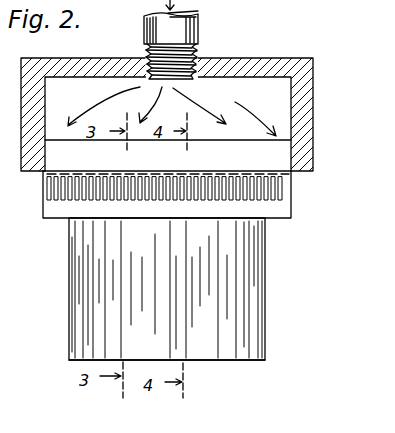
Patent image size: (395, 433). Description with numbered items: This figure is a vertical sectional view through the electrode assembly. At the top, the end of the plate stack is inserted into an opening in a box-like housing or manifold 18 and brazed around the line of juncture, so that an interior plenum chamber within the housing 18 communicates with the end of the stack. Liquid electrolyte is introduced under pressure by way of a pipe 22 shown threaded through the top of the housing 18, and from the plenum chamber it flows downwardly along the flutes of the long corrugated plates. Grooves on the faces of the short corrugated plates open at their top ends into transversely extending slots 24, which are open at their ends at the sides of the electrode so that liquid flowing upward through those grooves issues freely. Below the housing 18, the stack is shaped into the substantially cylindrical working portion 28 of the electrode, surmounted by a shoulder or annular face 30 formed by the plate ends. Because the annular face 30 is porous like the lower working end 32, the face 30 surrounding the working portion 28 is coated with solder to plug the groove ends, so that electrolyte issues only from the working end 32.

The housing 18 is at (267, 67).
The pipe 22 is at (198, 30).
The transversely extending slots 24 is at (262, 192).
The working portion of the electrode 28 is at (92, 298).
The shoulder or annular face 30 is at (55, 219).
The lower working end of the electrode 32 is at (236, 360).